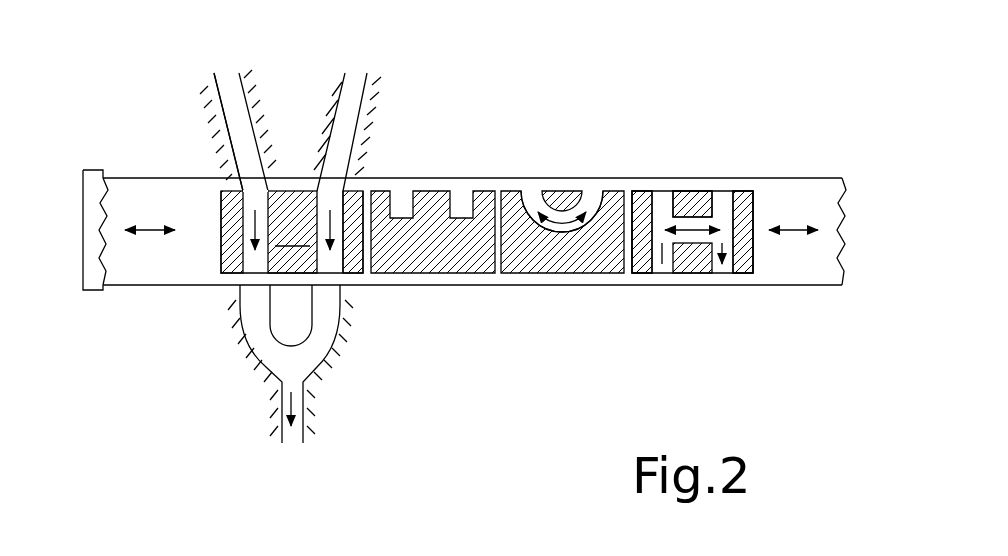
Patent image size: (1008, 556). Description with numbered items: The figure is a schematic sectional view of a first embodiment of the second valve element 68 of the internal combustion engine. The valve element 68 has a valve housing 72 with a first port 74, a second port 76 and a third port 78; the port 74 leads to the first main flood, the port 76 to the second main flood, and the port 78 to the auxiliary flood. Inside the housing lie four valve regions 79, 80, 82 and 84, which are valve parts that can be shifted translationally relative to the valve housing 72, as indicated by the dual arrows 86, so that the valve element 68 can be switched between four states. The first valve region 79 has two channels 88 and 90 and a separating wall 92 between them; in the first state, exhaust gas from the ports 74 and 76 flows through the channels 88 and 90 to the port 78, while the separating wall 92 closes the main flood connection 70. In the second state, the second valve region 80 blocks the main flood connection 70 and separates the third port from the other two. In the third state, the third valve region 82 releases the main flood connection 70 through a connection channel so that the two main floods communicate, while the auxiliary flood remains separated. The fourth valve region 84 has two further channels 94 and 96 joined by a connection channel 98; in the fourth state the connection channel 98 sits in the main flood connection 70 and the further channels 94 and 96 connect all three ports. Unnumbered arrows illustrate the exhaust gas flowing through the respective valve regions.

The second valve element 68 is at (230, 289).
The main flood connection 70 is at (326, 197).
The valve housing 72 is at (218, 124).
The first port 74 is at (364, 70).
The second port 76 is at (226, 70).
The third port 78 is at (294, 447).
The first valve region 79 is at (355, 288).
The second valve region 80 is at (460, 274).
The third valve region 82 is at (591, 274).
The fourth valve region 84 is at (695, 274).
The dual arrows 86 is at (150, 233).
The first channel 88 is at (348, 232).
The second channel 90 is at (259, 190).
The separating wall 92 is at (528, 190).
The first further channel 94 is at (657, 190).
The second further channel 96 is at (727, 190).
The connection channel 98 is at (693, 190).